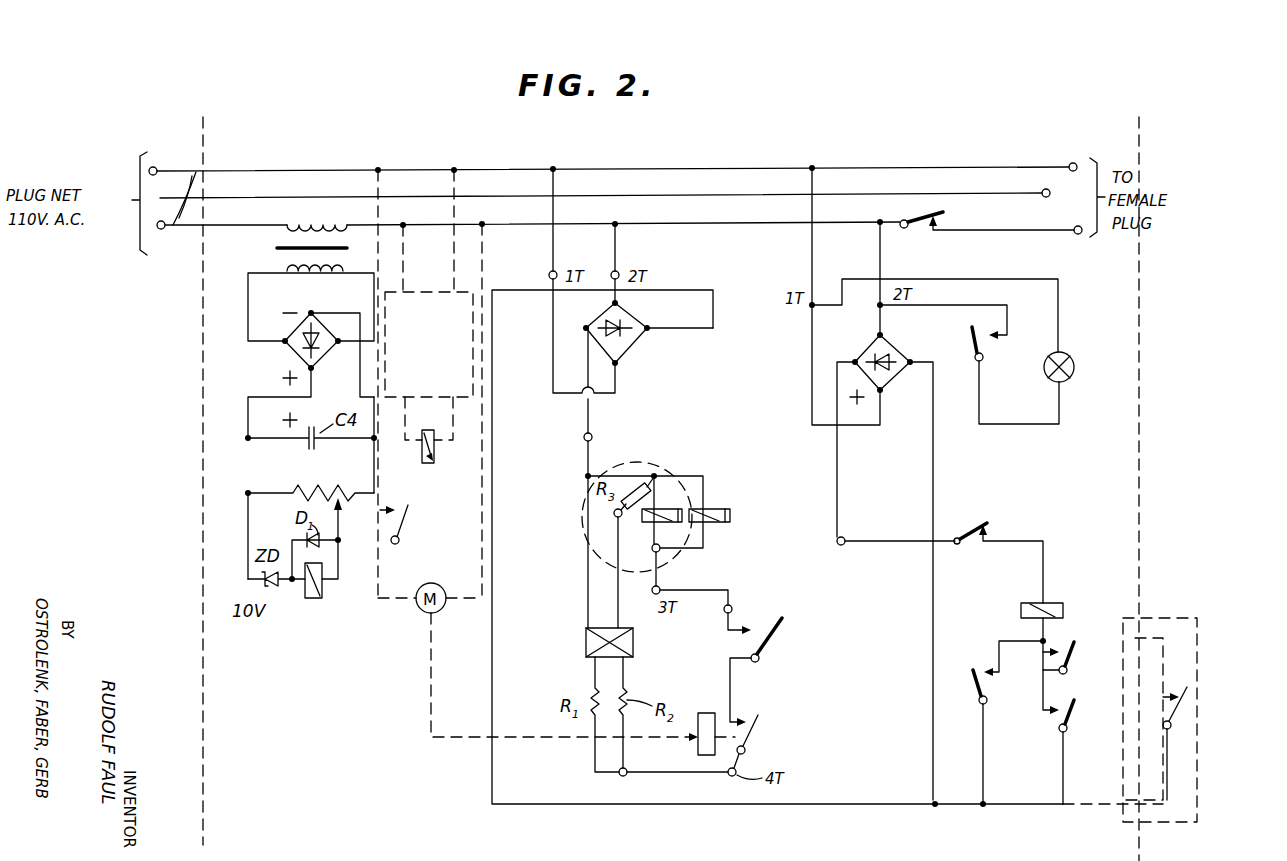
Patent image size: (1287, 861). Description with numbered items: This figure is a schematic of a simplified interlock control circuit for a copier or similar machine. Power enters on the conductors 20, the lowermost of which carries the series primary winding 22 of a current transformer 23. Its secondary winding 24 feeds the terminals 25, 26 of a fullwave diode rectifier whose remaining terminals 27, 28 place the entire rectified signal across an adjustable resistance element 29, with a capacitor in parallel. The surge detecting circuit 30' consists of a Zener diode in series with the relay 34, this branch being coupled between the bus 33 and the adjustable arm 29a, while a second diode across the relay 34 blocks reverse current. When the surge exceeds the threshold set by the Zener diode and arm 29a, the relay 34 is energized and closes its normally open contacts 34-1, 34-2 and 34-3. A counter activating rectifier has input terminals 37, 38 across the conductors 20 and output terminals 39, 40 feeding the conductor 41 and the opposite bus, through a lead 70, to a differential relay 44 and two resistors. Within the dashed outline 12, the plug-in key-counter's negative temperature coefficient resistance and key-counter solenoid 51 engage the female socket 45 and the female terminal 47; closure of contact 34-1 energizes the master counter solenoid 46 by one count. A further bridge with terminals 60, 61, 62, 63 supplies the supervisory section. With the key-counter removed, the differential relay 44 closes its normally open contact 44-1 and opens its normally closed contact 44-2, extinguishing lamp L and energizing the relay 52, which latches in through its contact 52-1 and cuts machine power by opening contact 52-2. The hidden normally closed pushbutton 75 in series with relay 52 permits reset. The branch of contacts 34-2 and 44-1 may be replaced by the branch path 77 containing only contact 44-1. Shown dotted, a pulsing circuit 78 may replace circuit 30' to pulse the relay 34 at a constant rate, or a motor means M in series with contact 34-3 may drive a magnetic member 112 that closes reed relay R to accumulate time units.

The relay assembly 12 is at (644, 462).
The power conductors 20 is at (190, 176).
The primary winding 22 is at (300, 226).
The current transformer 23 is at (273, 249).
The secondary winding 24 is at (313, 268).
The rectifier terminal 25 is at (285, 341).
The rectifier terminal 26 is at (338, 341).
The rectifier terminal 27 is at (311, 313).
The rectifier terminal 28 is at (311, 368).
The adjustable resistance element 29 is at (338, 486).
The adjustable arm 29a is at (358, 511).
The surge detecting circuit 30' is at (201, 527).
The bus 33 is at (248, 438).
The relay 34 is at (314, 598).
The relay contact 34-1 is at (765, 655).
The relay contact 34-2 is at (1072, 655).
The relay contact 34-3 is at (405, 535).
The rectifier input terminal 37 is at (622, 303).
The rectifier input terminal 38 is at (615, 363).
The rectifier output terminal 39 is at (586, 333).
The rectifier output terminal 40 is at (647, 328).
The conductor 41 is at (588, 588).
The differential relay 44 is at (586, 640).
The relay contact 44-1 is at (1070, 718).
The relay contact 44-2 is at (982, 348).
The female socket 45 is at (609, 568).
The master counter solenoid 46 is at (706, 522).
The female terminal 47 is at (652, 551).
The key-counter solenoid 51 is at (654, 511).
The relay 52 is at (1060, 605).
The relay contact 52-1 is at (977, 682).
The relay contact 52-2 is at (936, 216).
The rectifier bridge terminal 60 is at (855, 362).
The rectifier bridge terminal 61 is at (910, 362).
The rectifier bridge terminal 62 is at (880, 335).
The rectifier bridge terminal 63 is at (880, 390).
The conductor 70 is at (623, 612).
The pushbutton 75 is at (965, 535).
The branch path 77 is at (1170, 825).
The pulsing circuit 78 is at (430, 384).
The magnetic member 112 is at (690, 746).